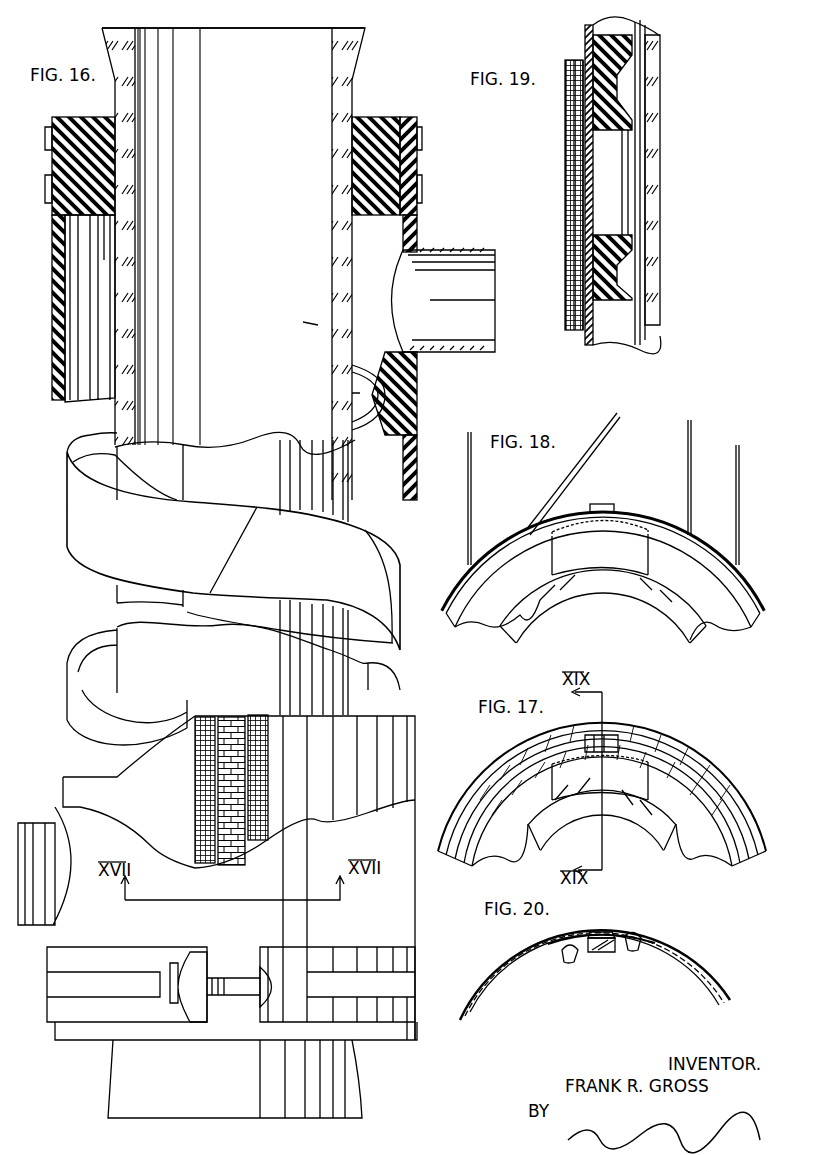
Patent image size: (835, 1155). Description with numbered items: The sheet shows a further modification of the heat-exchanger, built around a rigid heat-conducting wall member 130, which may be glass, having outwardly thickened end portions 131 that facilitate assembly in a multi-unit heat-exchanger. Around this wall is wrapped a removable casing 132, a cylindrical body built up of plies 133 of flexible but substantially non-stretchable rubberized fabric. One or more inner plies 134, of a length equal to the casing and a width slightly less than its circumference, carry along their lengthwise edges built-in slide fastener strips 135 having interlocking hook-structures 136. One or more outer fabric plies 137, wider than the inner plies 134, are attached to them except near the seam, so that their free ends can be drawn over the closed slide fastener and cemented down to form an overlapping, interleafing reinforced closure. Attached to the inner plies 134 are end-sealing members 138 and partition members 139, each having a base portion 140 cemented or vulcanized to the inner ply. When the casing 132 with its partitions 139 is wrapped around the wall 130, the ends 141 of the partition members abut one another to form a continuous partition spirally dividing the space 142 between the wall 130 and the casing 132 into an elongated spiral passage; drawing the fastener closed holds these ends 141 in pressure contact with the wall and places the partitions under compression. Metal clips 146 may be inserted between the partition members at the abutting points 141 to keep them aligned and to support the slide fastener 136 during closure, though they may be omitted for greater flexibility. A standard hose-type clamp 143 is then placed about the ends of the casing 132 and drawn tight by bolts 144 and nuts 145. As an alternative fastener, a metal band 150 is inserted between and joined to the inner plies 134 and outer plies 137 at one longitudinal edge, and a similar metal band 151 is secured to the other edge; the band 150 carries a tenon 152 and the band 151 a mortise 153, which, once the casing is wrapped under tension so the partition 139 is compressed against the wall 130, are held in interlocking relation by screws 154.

In FIG. 16, the heat-conducting wall member 130 is at (340, 243).
In FIG. 18, the heat-conducting wall member 130 is at (686, 621).
In FIG. 16, the outwardly thickened end portions 131 is at (348, 52).
In FIG. 16, the casing 132 is at (57, 277).
In FIG. 20, the casing 132 is at (728, 997).
In FIG. 19, the plies 133 is at (572, 200).
In FIG. 16, the inner plies 134 is at (80, 778).
In FIG. 18, the inner plies 134 is at (497, 570).
In FIG. 17, the inner plies 134 is at (503, 782).
In FIG. 20, the inner plies 134 is at (525, 976).
In FIG. 16, the slide fastener strips 135 is at (205, 759).
In FIG. 18, the slide fastener strips 135 is at (568, 521).
In FIG. 17, the slide fastener strips 135 is at (598, 747).
In FIG. 16, the interlocking hook-structures 136 is at (228, 781).
In FIG. 19, the interlocking hook-structures 136 is at (584, 336).
In FIG. 18, the interlocking hook-structures 136 is at (602, 504).
In FIG. 17, the interlocking hook-structures 136 is at (606, 741).
In FIG. 18, the outer fabric plies 137 is at (474, 511).
In FIG. 20, the outer fabric plies 137 is at (508, 951).
In FIG. 16, the end-sealing members 138 is at (380, 126).
In FIG. 16, the partition members 139 is at (397, 384).
In FIG. 19, the partition members 139 is at (615, 300).
In FIG. 16, the base portion 140 is at (412, 410).
In FIG. 16, the ends of the partition members 141 is at (345, 394).
In FIG. 16, the space 142 is at (100, 378).
In FIG. 18, the space 142 is at (498, 600).
In FIG. 17, the space 142 is at (730, 828).
In FIG. 16, the clamp 143 is at (424, 185).
In FIG. 16, the bolts 144 is at (232, 976).
In FIG. 16, the nuts 145 is at (178, 964).
In FIG. 16, the metal clips 146 is at (232, 446).
In FIG. 19, the metal clips 146 is at (605, 195).
In FIG. 18, the metal clips 146 is at (612, 545).
In FIG. 17, the metal clips 146 is at (625, 780).
In FIG. 20, the metal band 150 is at (566, 960).
In FIG. 20, the metal band 151 is at (655, 944).
In FIG. 20, the tenon 152 is at (598, 952).
In FIG. 20, the mortise 153 is at (606, 930).
In FIG. 20, the screws 154 is at (640, 928).